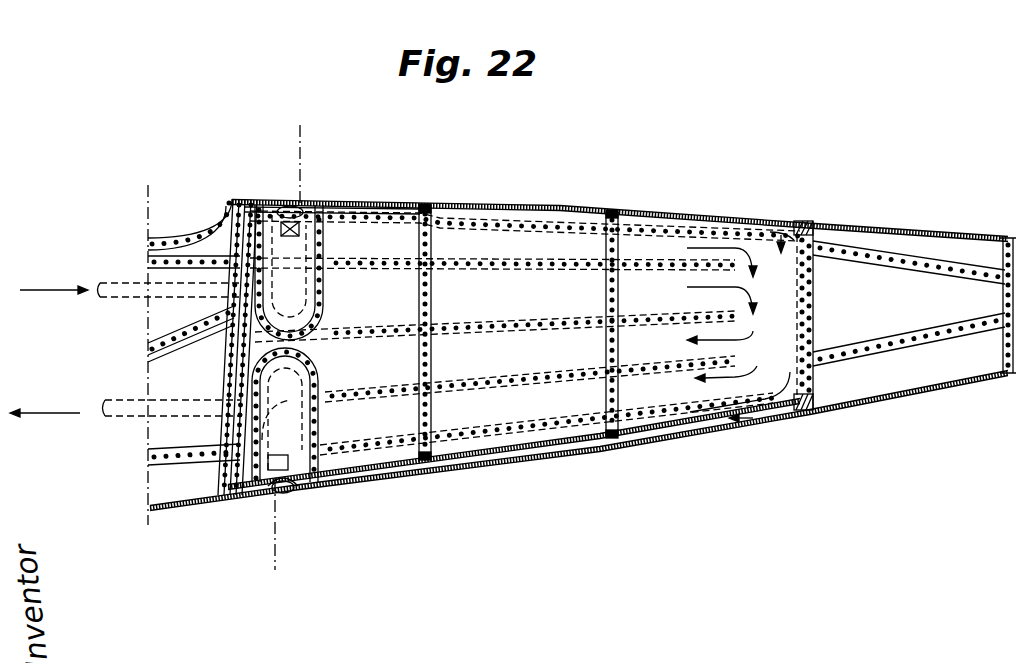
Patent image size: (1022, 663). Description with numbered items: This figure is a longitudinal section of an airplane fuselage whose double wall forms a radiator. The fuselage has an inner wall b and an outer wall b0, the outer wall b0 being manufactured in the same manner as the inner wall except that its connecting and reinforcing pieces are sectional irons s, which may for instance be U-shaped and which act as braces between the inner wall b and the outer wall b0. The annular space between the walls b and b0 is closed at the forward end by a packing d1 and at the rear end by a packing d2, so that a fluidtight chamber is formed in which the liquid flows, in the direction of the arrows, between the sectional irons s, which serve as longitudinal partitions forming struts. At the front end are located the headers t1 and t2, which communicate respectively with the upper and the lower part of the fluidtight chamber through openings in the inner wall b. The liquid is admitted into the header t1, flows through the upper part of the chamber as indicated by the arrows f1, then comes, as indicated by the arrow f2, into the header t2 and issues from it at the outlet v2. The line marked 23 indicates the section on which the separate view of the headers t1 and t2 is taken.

The outer wall b0 is at (388, 199).
The inner wall b is at (395, 212).
The sectional irons s is at (515, 262).
The packing d1 is at (237, 200).
The packing d2 is at (812, 222).
The header t1 is at (117, 284).
The header t2 is at (126, 420).
The outlet v2 is at (270, 488).
The section line 23 is at (302, 348).
The arrows f1 is at (708, 250).
The arrow f2 is at (757, 418).